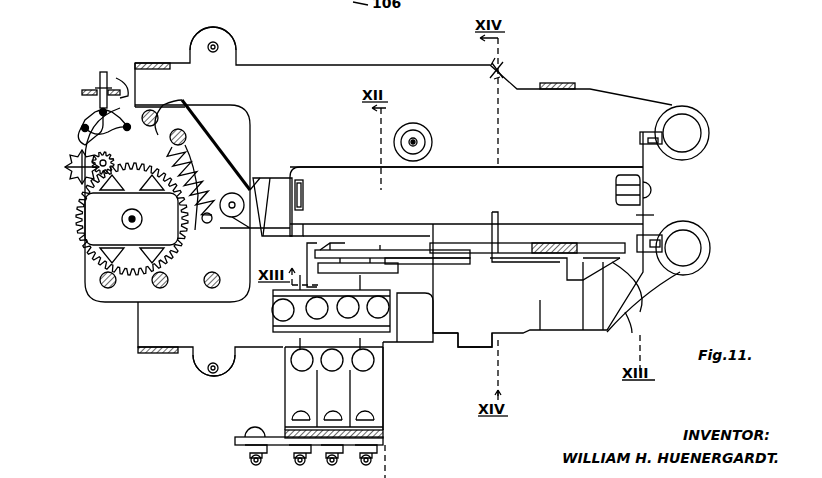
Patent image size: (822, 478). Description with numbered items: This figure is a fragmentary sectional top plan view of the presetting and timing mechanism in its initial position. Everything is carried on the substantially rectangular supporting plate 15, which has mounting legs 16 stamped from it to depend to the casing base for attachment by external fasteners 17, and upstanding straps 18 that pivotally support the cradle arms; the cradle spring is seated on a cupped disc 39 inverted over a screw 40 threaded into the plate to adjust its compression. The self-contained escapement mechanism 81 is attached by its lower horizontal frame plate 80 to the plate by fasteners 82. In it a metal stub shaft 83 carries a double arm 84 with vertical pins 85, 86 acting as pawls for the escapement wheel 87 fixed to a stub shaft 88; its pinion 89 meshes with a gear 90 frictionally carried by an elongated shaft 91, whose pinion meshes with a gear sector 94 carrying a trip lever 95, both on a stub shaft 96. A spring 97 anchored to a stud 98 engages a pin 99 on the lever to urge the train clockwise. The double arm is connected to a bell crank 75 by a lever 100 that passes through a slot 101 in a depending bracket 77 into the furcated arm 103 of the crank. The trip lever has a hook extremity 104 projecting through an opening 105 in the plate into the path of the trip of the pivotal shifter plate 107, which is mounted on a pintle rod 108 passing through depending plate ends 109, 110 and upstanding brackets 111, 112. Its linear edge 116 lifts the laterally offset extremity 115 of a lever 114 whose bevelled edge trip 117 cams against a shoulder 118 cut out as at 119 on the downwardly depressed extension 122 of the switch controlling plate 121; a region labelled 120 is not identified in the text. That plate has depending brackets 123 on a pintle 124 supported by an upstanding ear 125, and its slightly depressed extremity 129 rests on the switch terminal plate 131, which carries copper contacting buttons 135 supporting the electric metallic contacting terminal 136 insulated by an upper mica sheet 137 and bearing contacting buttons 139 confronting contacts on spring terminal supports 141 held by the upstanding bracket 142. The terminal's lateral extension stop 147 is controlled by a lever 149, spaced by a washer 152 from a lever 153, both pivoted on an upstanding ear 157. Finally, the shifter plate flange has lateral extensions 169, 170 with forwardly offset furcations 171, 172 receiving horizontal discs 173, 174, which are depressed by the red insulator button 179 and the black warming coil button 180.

The supporting plate 15 is at (498, 64).
The mounting legs 16 is at (232, 48).
The external fasteners 17 is at (208, 42).
The upstanding straps 18 is at (150, 63).
The cupped disc 39 is at (432, 142).
The screw 40 is at (415, 140).
The bell crank 75 is at (88, 90).
The depending bracket 77 is at (110, 93).
The lower horizontal frame plate 80 is at (120, 297).
The self-contained escapement mechanism 81 is at (218, 126).
The fasteners 82 is at (150, 110).
The metal stub shaft 83 is at (99, 112).
The double arm 84 is at (83, 126).
The vertical pin 85 is at (80, 130).
The vertical pin 86 is at (130, 118).
The escapement wheel 87 is at (98, 163).
The stub shaft 88 is at (73, 181).
The pinion 89 is at (96, 160).
The gear 90 is at (78, 226).
The elongated shaft 91 is at (138, 217).
The gear sector 94 is at (182, 133).
The trip lever 95 is at (248, 192).
The stub shaft 96 is at (233, 193).
The spring 97 is at (200, 168).
The stud 98 is at (190, 122).
The pin 99 is at (208, 223).
The lever 100 is at (103, 72).
The slot 101 is at (118, 78).
The furcated arm 103 is at (97, 87).
The hook extremity 104 is at (272, 186).
The opening 105 is at (276, 174).
The pivotal shifter plate 107 is at (535, 168).
The pintle rod 108 is at (625, 178).
The depending plate end 109 is at (646, 170).
The depending plate end 110 is at (298, 230).
The upstanding bracket 111 is at (652, 198).
The upstanding bracket 112 is at (304, 195).
The lever 114 is at (550, 243).
The laterally offset extremity 115 is at (496, 228).
The linear edge 116 is at (382, 225).
The bevelled edge trip 117 is at (593, 270).
The shoulder 118 is at (635, 308).
The cut out 119 is at (563, 265).
The lower housing 120 is at (500, 282).
The switch controlling plate 121 is at (553, 312).
The downwardly depressed extension 122 is at (618, 322).
The depending brackets 123 is at (472, 338).
The pintle 124 is at (478, 357).
The upstanding ear 125 is at (462, 342).
The slightly depressed extremity 129 is at (414, 330).
The switch terminal plate 131 is at (378, 345).
The copper contacting buttons 135 is at (366, 300).
The electric metallic contacting terminal 136 is at (300, 365).
The upper mica sheet 137 is at (278, 330).
The contacting buttons 139 is at (352, 372).
The spring terminal supports 141 is at (300, 404).
The upstanding and outwardly offset bracket 142 is at (385, 435).
The lateral extension stop 147 is at (308, 258).
The lever 149 is at (345, 255).
The washer 152 is at (342, 265).
The lever 153 is at (328, 250).
The upstanding ear 157 is at (376, 252).
The lateral extension 169 is at (656, 218).
The lateral extension 170 is at (650, 135).
The forwardly offset furcation 171 is at (670, 236).
The forwardly offset furcation 172 is at (660, 118).
The horizontal disc 173 is at (702, 258).
The horizontal disc 174 is at (700, 116).
The insulator button 179 is at (692, 264).
The insulator button 180 is at (697, 136).